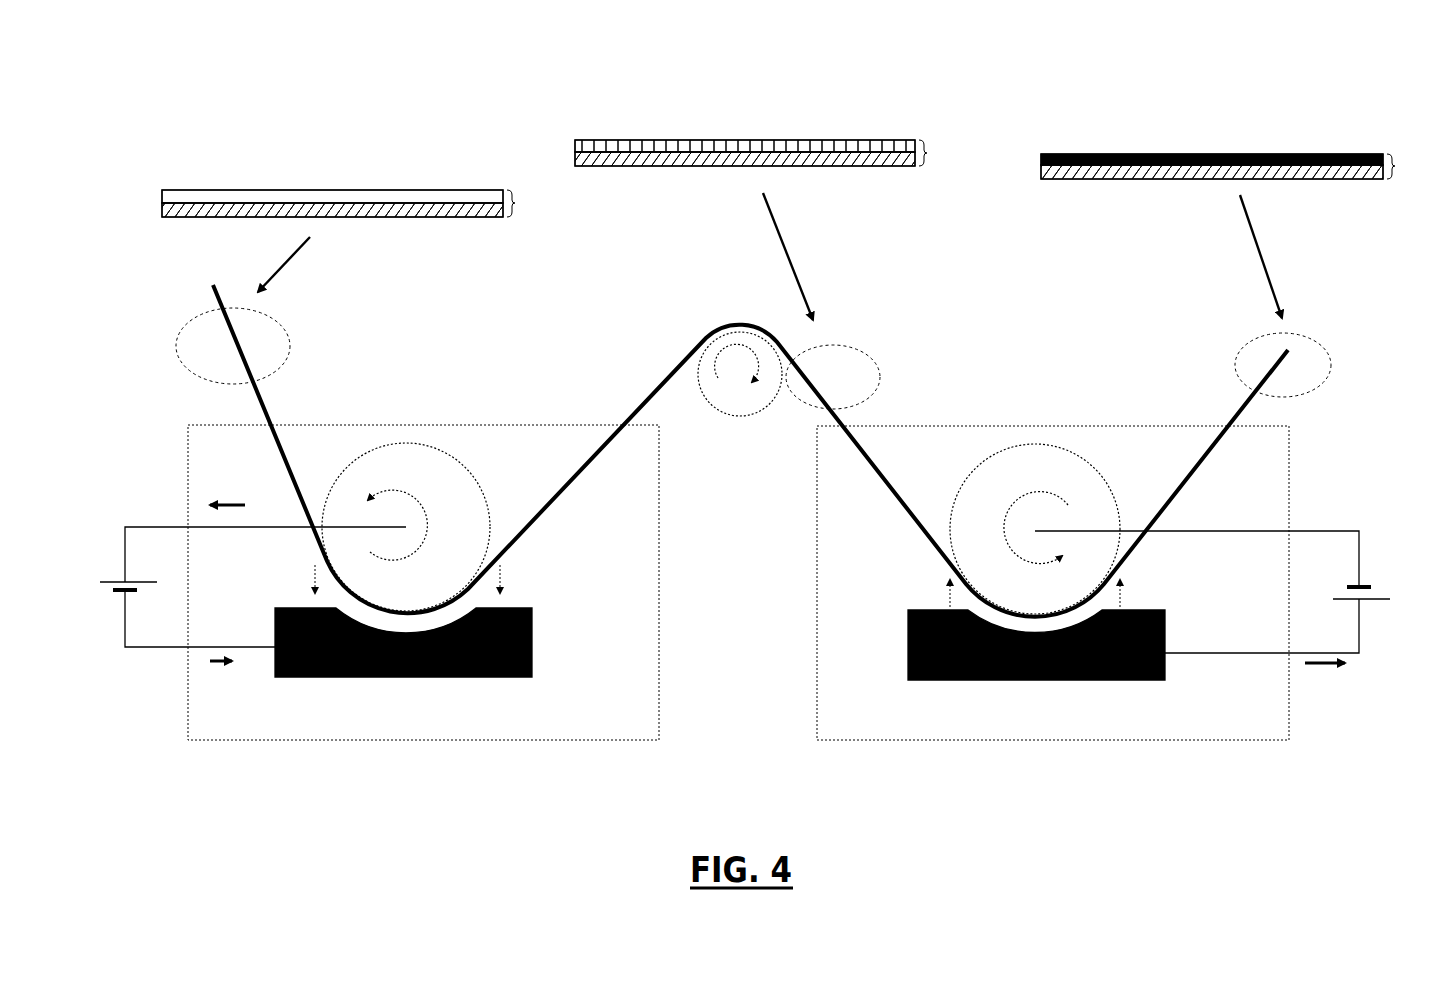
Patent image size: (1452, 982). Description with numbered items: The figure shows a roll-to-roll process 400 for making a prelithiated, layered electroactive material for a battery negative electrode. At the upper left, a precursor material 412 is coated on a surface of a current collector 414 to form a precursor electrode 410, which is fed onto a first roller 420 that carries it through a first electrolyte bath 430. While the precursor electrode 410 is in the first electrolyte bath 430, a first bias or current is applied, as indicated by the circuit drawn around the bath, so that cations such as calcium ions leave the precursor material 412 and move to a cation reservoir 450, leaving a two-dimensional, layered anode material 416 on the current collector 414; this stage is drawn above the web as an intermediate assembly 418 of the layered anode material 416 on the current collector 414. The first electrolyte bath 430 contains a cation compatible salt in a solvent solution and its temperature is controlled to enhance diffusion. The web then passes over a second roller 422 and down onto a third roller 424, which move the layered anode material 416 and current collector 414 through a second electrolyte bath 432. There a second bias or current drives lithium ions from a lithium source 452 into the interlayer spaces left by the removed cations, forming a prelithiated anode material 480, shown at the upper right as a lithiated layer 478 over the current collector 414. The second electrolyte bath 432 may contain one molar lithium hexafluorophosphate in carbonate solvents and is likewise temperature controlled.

The roll-to-roll process 400 is at (232, 100).
The precursor electrode 410 is at (237, 346).
The precursor material 412 is at (330, 190).
The current collector 414 is at (425, 217).
The two-dimensional, layered anode material 416 is at (748, 140).
The patterned substrate stack 418 is at (817, 387).
The first roller 420 is at (420, 443).
The second roller 422 is at (702, 382).
The third roller 424 is at (1023, 443).
The first electrolyte bath 430 is at (620, 587).
The second electrolyte bath 432 is at (1250, 714).
The cation reservoir 450 is at (513, 677).
The lithium source 452 is at (975, 680).
The deposited layer 478 is at (1210, 154).
The prelithiated anode material 480 is at (1192, 363).